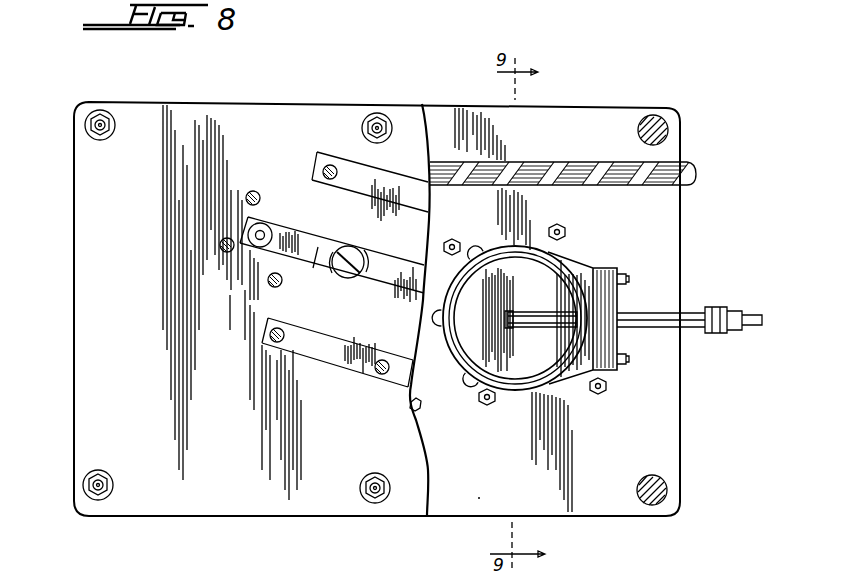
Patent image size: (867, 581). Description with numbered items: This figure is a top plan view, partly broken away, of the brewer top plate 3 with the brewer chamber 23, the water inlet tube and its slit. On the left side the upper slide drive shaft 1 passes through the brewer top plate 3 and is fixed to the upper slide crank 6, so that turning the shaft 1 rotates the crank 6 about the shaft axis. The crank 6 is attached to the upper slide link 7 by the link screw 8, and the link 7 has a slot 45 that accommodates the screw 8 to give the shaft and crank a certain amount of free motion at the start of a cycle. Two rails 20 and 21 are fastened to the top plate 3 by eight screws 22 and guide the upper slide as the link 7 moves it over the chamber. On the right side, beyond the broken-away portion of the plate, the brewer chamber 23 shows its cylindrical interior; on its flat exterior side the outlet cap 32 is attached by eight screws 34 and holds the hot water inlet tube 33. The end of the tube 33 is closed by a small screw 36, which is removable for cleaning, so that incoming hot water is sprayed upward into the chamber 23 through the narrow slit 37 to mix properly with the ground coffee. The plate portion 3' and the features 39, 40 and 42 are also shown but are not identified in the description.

The upper slide drive shaft 1 is at (252, 242).
The brewer top plate 3 is at (377, 323).
The plate portion 3' is at (468, 527).
The upper slide crank 6 is at (307, 231).
The upper slide link 7 is at (398, 260).
The link screw 8 is at (350, 256).
The rail 20 is at (323, 354).
The rail 21 is at (349, 162).
The screws 22 is at (284, 336).
The brewer chamber 23 is at (460, 361).
The outlet cap 32 is at (613, 304).
The hot water inlet tube 33 is at (693, 316).
The screws 34 is at (628, 276).
The small screw 36 is at (504, 318).
The narrow slit 37 is at (535, 328).
The hole 39 is at (668, 128).
The corner bolt 40 is at (100, 111).
The bolt 42 is at (388, 119).
The slot 45 is at (340, 270).